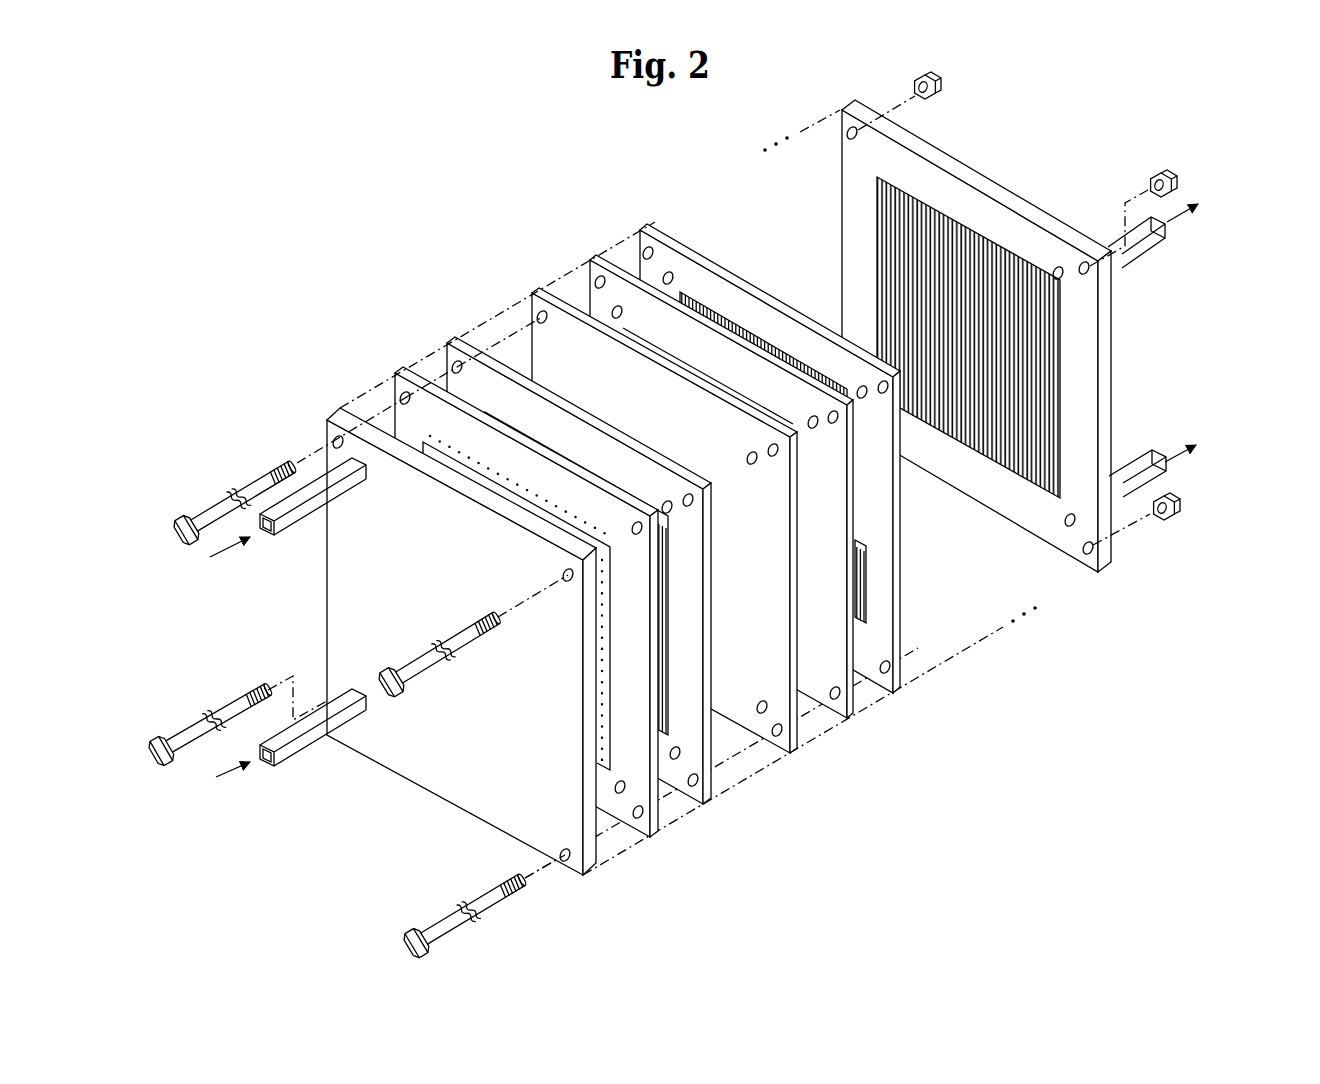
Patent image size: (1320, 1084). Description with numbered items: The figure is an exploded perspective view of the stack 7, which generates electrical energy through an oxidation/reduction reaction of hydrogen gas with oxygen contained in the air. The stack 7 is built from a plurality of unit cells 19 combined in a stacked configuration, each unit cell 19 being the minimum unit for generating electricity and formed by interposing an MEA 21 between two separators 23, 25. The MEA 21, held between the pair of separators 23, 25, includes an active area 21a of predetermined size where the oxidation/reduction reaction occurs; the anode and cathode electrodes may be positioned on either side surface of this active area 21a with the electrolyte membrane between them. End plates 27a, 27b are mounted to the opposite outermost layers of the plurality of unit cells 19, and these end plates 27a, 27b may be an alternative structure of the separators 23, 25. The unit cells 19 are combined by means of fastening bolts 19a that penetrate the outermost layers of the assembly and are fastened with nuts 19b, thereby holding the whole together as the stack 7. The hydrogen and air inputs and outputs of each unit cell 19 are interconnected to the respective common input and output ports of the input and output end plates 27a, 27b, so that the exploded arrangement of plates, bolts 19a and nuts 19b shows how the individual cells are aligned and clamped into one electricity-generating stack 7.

The stack 7 is at (362, 236).
The unit cell 19 is at (638, 165).
The fastening bolt 19a is at (220, 504).
The nut 19b is at (928, 73).
The MEA 21 is at (714, 503).
The active area 21a is at (805, 643).
The separator 23 is at (532, 291).
The separator 25 is at (641, 228).
The end plate 27a is at (470, 803).
The end plate 27b is at (1108, 550).